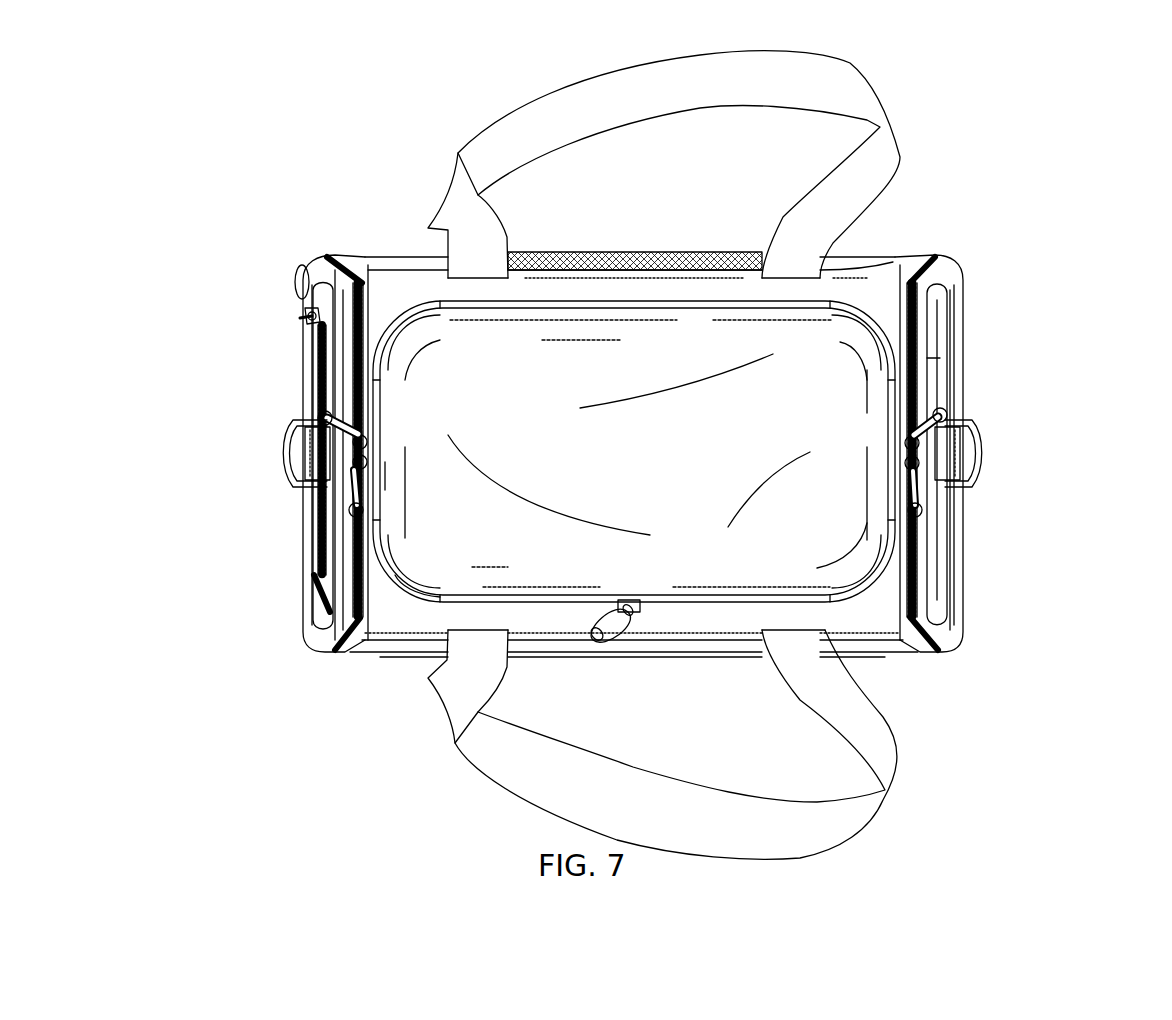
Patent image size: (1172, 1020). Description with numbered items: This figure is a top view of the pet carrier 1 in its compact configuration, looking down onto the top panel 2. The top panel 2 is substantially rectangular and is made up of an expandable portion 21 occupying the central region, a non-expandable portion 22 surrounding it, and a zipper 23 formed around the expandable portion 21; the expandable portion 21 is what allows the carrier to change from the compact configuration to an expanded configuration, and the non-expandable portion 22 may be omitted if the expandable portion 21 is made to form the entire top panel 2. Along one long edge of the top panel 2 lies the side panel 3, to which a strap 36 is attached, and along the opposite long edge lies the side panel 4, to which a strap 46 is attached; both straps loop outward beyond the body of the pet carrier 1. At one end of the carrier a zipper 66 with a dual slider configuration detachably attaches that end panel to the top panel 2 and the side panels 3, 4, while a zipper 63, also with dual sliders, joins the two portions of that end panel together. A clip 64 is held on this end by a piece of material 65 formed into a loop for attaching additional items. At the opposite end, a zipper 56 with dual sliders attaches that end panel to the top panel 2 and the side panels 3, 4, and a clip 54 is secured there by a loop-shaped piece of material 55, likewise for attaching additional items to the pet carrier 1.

The pet carrier 1 is at (280, 270).
The top panel 2 is at (875, 283).
The side panel 3 is at (373, 652).
The side panel 4 is at (363, 253).
The expandable portion 21 is at (873, 405).
The non-expandable portion 22 is at (882, 301).
The zipper 23 is at (617, 617).
The strap 36 is at (860, 700).
The strap 46 is at (488, 137).
The clip 54 is at (980, 457).
The piece of material 55 is at (948, 469).
The zipper 56 is at (917, 467).
The zipper 63 is at (303, 320).
The clip 64 is at (287, 462).
The piece of material 65 is at (323, 437).
The zipper 66 is at (353, 453).